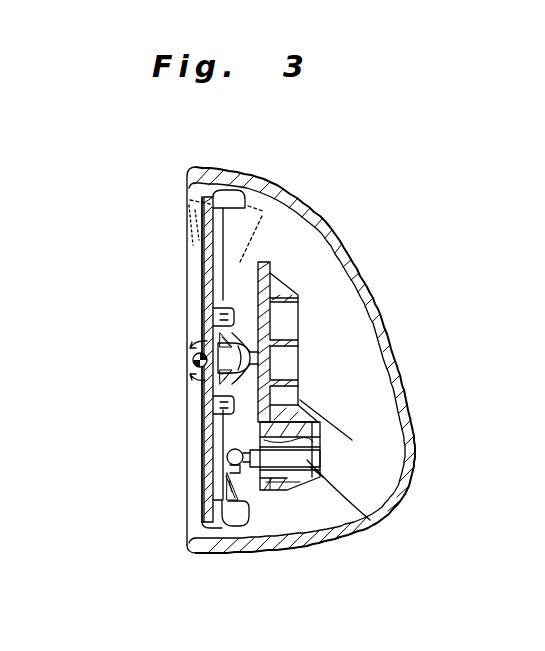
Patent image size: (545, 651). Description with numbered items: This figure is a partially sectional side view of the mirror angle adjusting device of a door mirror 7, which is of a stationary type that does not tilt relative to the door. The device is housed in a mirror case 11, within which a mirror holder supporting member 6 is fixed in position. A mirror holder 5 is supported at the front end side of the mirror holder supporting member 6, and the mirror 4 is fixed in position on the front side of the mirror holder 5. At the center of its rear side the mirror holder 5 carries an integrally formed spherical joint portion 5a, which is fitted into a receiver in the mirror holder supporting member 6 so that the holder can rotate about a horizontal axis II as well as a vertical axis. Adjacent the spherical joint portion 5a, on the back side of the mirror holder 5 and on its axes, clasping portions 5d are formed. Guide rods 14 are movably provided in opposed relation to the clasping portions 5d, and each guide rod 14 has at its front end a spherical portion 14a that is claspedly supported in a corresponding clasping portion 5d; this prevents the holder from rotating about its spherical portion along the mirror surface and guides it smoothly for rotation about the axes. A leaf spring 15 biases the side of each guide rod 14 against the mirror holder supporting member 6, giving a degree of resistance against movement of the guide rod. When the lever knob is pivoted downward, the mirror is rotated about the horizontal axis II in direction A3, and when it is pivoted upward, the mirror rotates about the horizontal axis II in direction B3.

The door mirror 7 is at (356, 170).
The mirror case 11 is at (352, 248).
The mirror 4 is at (193, 276).
The mirror holder 5 is at (210, 245).
The spherical joint portion 5a is at (256, 364).
The clasping portion 5d is at (241, 470).
The mirror holder supporting member 6 is at (316, 302).
The guide rod 14 is at (370, 520).
The spherical portion 14a is at (227, 458).
The leaf spring 15 is at (298, 436).
The horizontal axis II is at (200, 360).
The direction A3 is at (178, 385).
The direction B3 is at (179, 343).